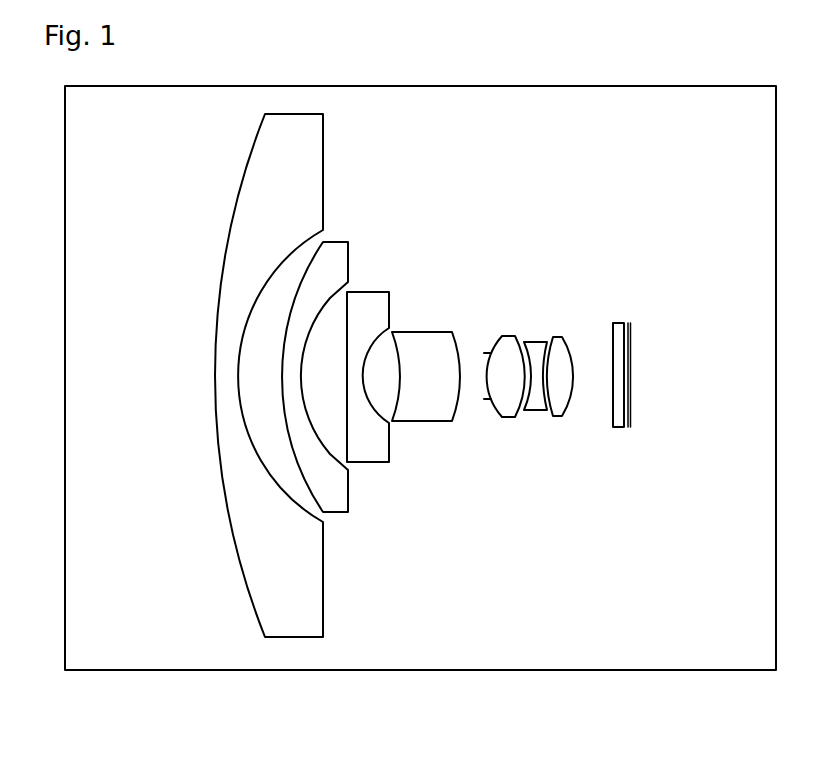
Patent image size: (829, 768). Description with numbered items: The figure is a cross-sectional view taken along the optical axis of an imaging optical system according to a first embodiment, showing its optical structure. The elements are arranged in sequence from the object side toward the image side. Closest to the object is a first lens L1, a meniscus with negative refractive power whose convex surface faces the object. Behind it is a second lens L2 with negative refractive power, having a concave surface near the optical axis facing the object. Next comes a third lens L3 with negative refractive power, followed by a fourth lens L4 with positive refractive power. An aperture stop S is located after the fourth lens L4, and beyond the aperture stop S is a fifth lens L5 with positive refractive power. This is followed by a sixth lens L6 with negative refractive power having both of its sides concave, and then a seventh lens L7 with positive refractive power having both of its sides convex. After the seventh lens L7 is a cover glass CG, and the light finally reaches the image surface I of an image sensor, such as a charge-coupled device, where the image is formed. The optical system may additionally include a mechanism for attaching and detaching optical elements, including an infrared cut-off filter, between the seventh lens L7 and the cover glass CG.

The first lens L1 is at (262, 582).
The second lens L2 is at (341, 500).
The third lens L3 is at (375, 453).
The fourth lens L4 is at (432, 410).
The fifth lens L5 is at (508, 417).
The sixth lens L6 is at (536, 410).
The seventh lens L7 is at (559, 416).
The aperture stop S is at (488, 401).
The cover glass CG is at (619, 428).
The image surface I is at (631, 405).